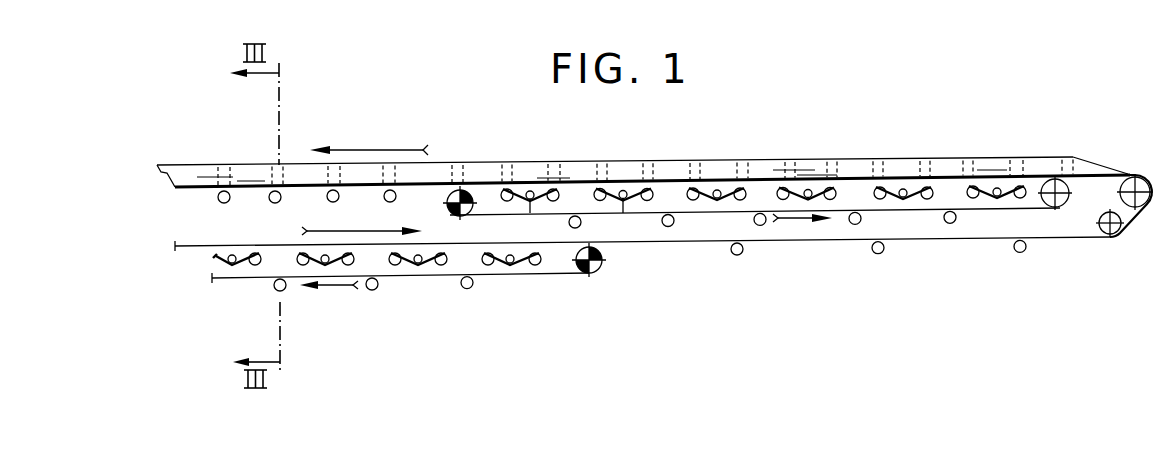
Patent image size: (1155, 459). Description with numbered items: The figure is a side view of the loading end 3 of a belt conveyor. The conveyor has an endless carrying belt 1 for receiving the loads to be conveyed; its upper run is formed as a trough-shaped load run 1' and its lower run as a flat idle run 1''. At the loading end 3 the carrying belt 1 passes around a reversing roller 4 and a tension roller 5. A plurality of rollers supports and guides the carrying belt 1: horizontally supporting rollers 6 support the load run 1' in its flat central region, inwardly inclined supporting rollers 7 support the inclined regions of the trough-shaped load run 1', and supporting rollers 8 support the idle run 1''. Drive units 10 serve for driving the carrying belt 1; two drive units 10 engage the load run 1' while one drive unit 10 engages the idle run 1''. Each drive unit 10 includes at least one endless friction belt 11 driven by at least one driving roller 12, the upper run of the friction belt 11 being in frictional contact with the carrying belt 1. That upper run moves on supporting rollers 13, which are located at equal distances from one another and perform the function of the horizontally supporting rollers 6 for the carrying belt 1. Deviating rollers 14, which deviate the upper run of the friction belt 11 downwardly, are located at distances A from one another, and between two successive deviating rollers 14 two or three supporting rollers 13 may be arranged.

The carrying belt 1 is at (663, 156).
The load run 1' is at (615, 148).
The idle run 1'' is at (642, 270).
The loading end 3 is at (1087, 129).
The reversing roller 4 is at (1140, 207).
The tension roller 5 is at (1114, 233).
The horizontally supporting rollers 6 is at (276, 202).
The inwardly inclined supporting rollers 7 is at (272, 165).
The supporting rollers 8 is at (880, 256).
The drive unit 10 is at (1008, 219).
The friction belt 11 is at (757, 182).
The driving roller 12 is at (447, 204).
The supporting rollers 13 is at (832, 187).
The deviating rollers 14 is at (808, 189).
The distance A is at (608, 207).